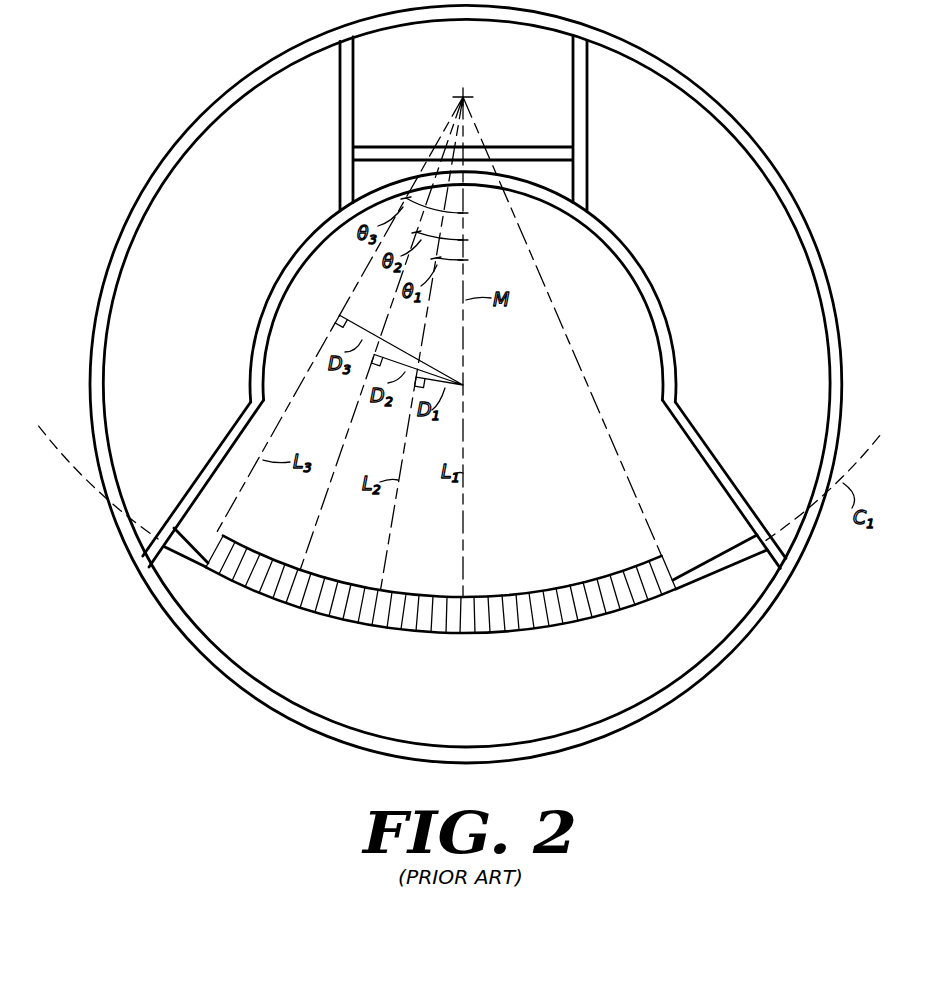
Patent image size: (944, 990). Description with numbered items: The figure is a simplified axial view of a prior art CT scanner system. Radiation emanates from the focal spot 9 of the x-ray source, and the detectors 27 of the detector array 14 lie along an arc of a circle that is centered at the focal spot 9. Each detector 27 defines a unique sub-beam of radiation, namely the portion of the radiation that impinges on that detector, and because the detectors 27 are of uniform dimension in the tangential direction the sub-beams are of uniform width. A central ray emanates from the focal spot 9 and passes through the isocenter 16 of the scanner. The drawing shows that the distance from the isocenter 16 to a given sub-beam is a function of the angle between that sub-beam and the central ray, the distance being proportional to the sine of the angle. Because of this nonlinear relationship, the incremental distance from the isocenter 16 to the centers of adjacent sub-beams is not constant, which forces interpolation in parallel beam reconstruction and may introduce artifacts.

The focal spot 9 is at (467, 94).
The detector 14 is at (632, 619).
The isocenter 16 is at (468, 385).
The detectors 27 is at (422, 625).